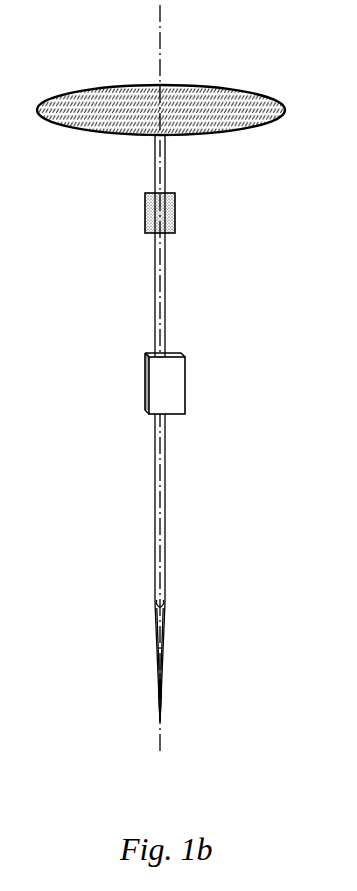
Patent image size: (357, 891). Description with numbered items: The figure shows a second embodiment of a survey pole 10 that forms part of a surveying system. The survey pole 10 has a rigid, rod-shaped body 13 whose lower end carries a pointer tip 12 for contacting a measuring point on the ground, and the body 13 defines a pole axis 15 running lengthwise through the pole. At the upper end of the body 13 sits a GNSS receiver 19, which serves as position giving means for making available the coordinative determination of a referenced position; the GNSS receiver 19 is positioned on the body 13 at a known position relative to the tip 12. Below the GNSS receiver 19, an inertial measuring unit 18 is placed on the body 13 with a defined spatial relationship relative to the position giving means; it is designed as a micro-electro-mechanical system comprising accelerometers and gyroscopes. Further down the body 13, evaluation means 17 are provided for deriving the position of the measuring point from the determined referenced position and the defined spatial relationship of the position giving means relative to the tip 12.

The survey pole 10 is at (207, 274).
The pointer tip 12 is at (160, 720).
The rod-shaped body 13 is at (165, 482).
The pole axis 15 is at (160, 62).
The evaluation means 17 is at (168, 382).
The inertial measuring unit 18 is at (173, 212).
The GNSS receiver 19 is at (247, 115).